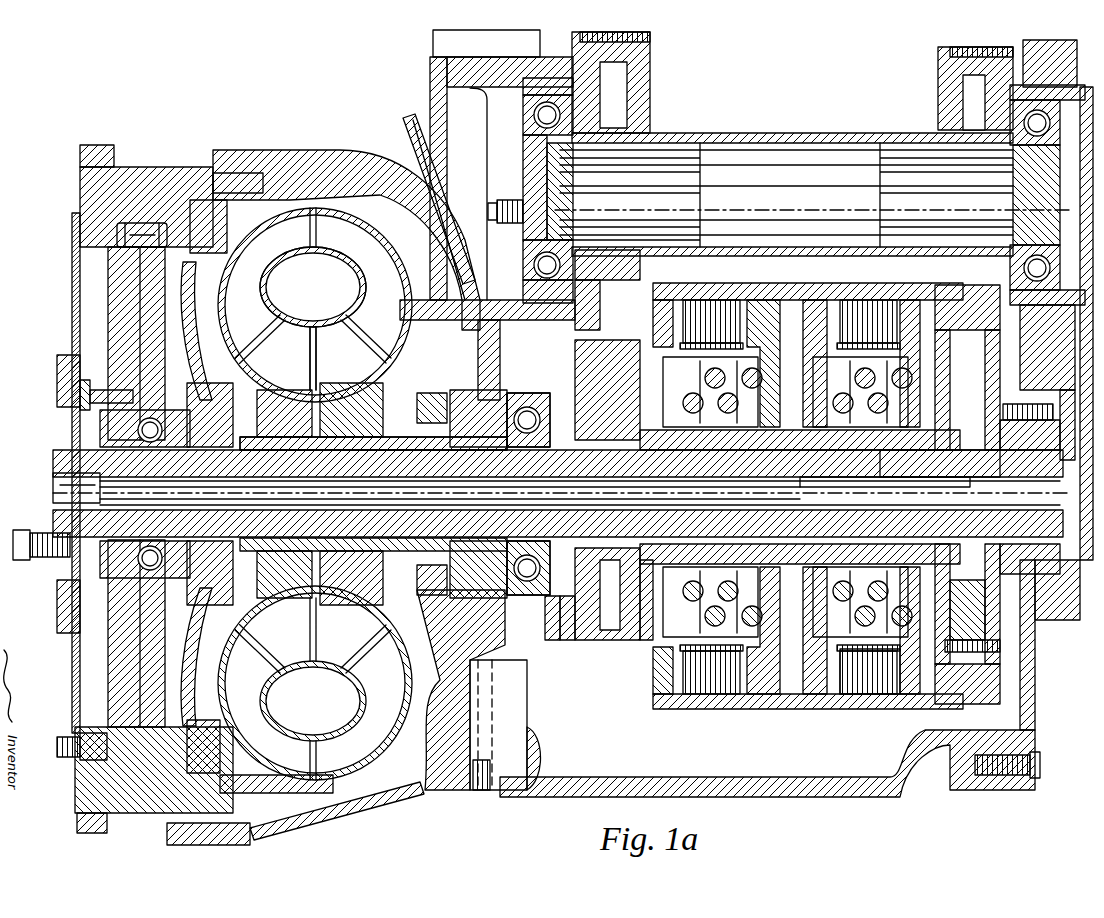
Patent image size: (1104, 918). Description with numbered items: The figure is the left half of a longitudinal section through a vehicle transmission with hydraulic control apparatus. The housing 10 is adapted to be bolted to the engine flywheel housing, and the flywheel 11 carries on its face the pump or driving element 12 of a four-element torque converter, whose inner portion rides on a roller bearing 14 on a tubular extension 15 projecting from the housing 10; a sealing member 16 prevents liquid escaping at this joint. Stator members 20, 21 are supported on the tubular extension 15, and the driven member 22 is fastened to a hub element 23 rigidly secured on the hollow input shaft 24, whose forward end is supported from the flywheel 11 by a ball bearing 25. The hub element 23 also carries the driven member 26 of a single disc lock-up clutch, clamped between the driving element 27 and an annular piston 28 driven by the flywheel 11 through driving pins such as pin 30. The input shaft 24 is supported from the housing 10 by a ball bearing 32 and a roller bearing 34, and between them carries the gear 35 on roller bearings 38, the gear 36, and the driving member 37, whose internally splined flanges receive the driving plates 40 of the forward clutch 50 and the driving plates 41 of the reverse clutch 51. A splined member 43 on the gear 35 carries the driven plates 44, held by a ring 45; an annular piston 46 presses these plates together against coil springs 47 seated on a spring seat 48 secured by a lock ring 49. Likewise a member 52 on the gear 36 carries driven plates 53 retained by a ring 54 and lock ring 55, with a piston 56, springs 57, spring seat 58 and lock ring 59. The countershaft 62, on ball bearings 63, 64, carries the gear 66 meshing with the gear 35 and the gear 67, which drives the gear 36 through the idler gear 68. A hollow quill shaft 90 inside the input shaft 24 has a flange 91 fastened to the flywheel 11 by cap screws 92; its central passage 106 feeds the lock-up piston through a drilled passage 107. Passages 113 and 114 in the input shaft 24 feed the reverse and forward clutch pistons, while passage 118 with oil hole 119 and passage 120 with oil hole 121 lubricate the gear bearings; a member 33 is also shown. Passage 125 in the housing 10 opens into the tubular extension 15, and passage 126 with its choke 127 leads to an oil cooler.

The housing 10 is at (440, 75).
The flywheel 11 is at (100, 195).
The pump or driving element 12 is at (330, 195).
The roller bearing 14 is at (380, 478).
The tubular extension 15 is at (295, 452).
The sealing member 16 is at (400, 602).
The stator member 20 is at (326, 328).
The stator member 21 is at (300, 328).
The driven member 22 is at (283, 225).
The hub element 23 is at (200, 450).
The hollow shaft 24 is at (232, 452).
The ball bearing 25 is at (148, 447).
The driven member 26 is at (195, 655).
The driving element 27 is at (205, 745).
The piston 28 is at (130, 300).
The driving pin 30 is at (133, 245).
The ball bearing 32 is at (553, 640).
The member 33 is at (965, 535).
The roller bearing 34 is at (1040, 638).
The gear 35 is at (576, 642).
The gear 36 is at (950, 668).
The driving member 37 is at (788, 700).
The roller bearings 38 is at (600, 640).
The driving plates 40 is at (682, 705).
The driving plates 41 is at (815, 300).
The member 43 is at (618, 276).
The driven plates 44 is at (708, 705).
The ring 45 is at (672, 303).
The annular piston 46 is at (720, 300).
The coil springs 47 is at (645, 640).
The spring seat 48 is at (712, 392).
The lock ring 49 is at (712, 586).
The forward clutch 50 is at (752, 708).
The reverse clutch 51 is at (865, 705).
The member 52 is at (928, 632).
The driven plates 53 is at (860, 300).
The ring 54 is at (920, 320).
The lock ring 55 is at (880, 690).
The piston 56 is at (775, 310).
The springs 57 is at (870, 428).
The spring seat 58 is at (862, 392).
The lock ring 59 is at (922, 540).
The output or countershaft 62 is at (752, 150).
The ball bearing 63 is at (525, 98).
The ball bearing 64 is at (1037, 135).
The gear 66 is at (640, 58).
The gear 67 is at (940, 66).
The idler gear 68 is at (1012, 278).
The hollow quill shaft 90 is at (1050, 443).
The flange 91 is at (62, 380).
The cap screws 92 is at (90, 386).
The passage 106 is at (60, 480).
The drilled passage 107 is at (95, 580).
The drilled passage 113 is at (810, 487).
The passage 114 is at (900, 478).
The passage 118 is at (982, 645).
The oil supply hole 119 is at (995, 540).
The oil passage 120 is at (600, 527).
The oil hole 121 is at (552, 435).
The passage 125 is at (490, 742).
The passage 126 is at (405, 125).
The choke or restriction 127 is at (428, 163).